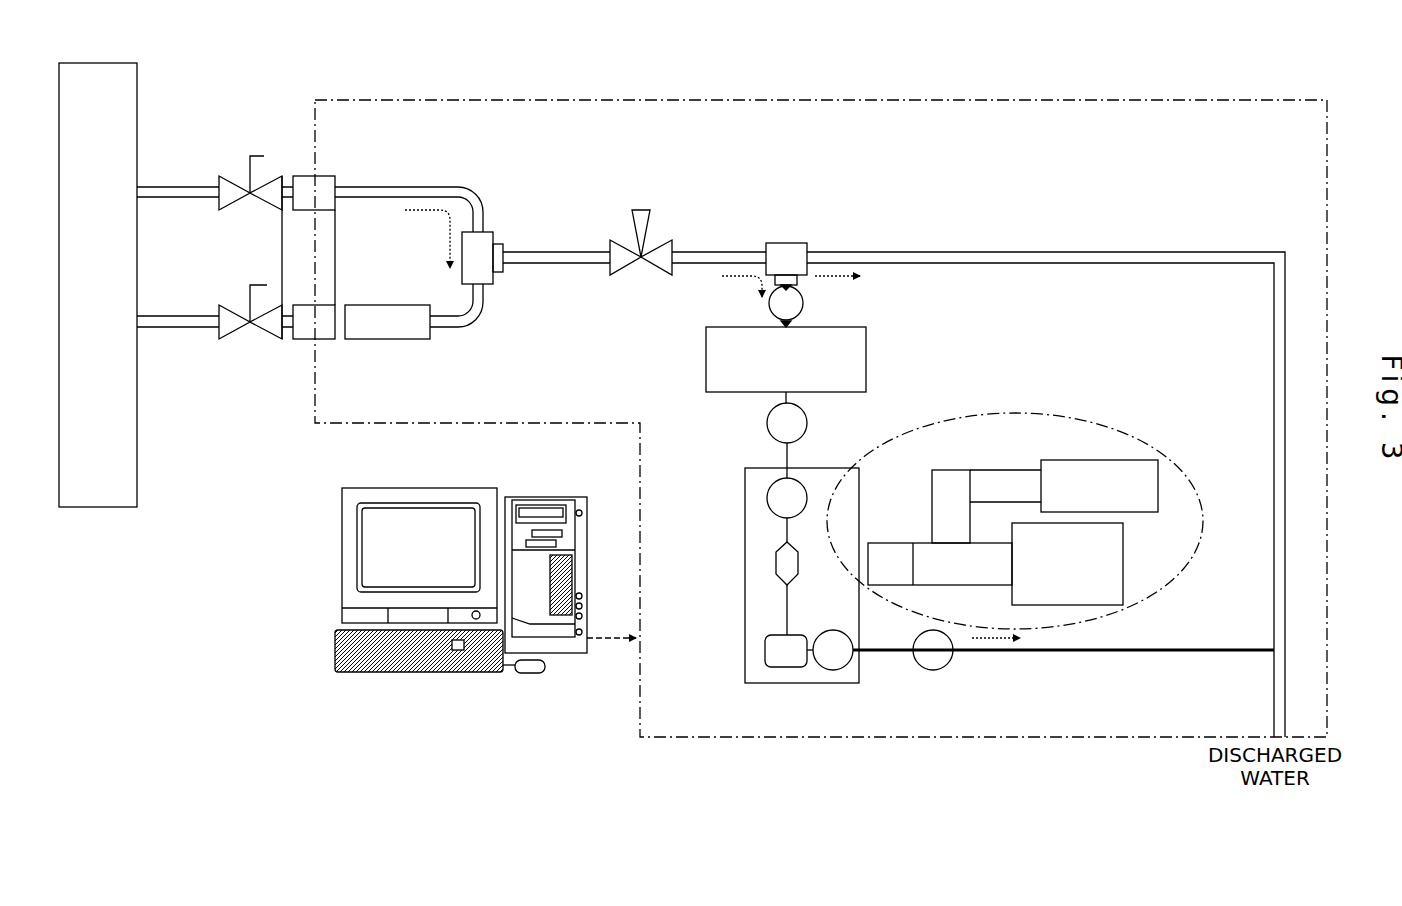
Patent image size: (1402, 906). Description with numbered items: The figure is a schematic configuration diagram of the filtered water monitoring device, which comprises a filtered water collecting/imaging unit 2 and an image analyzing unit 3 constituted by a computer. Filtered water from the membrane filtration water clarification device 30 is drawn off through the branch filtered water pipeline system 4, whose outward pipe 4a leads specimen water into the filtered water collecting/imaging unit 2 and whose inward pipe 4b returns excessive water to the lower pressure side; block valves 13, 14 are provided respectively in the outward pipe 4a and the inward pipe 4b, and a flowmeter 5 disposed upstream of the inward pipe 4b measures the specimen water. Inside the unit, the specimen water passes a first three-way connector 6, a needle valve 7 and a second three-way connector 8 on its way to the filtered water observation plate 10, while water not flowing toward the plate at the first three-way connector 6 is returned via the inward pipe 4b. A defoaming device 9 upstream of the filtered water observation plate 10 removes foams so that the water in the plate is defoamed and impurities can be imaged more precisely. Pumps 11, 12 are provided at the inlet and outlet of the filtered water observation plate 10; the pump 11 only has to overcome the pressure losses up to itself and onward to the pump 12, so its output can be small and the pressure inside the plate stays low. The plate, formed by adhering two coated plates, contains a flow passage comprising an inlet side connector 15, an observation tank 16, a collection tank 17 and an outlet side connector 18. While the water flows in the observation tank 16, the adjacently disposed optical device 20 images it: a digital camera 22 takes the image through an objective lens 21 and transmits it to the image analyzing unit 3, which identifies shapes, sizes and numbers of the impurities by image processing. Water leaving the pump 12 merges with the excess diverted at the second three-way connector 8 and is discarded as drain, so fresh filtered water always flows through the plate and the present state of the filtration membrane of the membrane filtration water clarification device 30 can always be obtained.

The filtered water collecting/imaging unit 2 is at (770, 98).
The image analyzing unit 3 is at (320, 549).
The branch filtered water pipeline system 4 is at (178, 245).
The outward pipe 4a is at (178, 201).
The inward pipe 4b is at (173, 331).
The flowmeter 5 is at (380, 303).
The first three-way connector 6 is at (490, 285).
The needle valve 7 is at (641, 263).
The second three-way connector 8 is at (786, 241).
The defoaming device 9 is at (706, 365).
The filtered water observation plate 10 is at (758, 575).
The pump 11 is at (766, 423).
The pump 12 is at (948, 663).
The block valve 13 is at (241, 177).
The block valve 14 is at (252, 342).
The inlet side connector 15 is at (766, 498).
The observation tank 16 is at (776, 553).
The collection tank 17 is at (765, 651).
The outlet side connector 18 is at (827, 630).
The optical device 20 is at (1019, 503).
The objective lens 21 is at (880, 588).
The digital camera 22 is at (1124, 596).
The membrane filtration water clarification device 30 is at (99, 512).